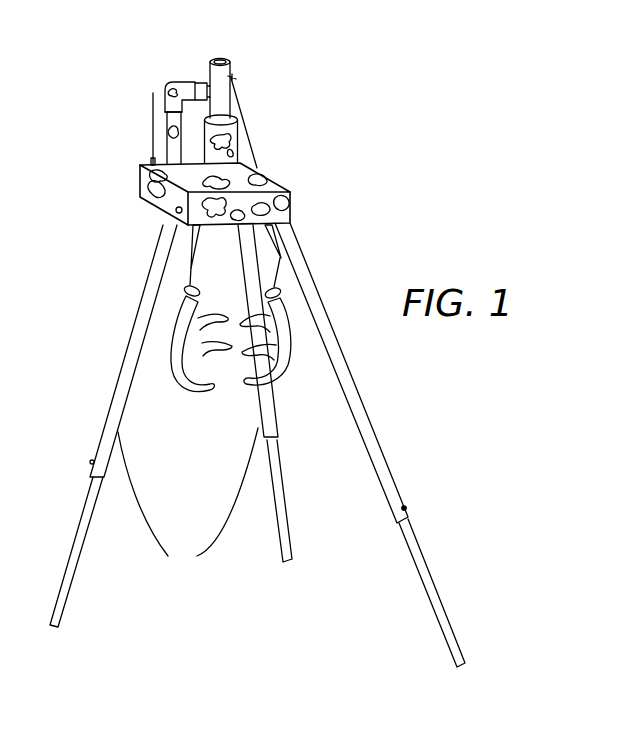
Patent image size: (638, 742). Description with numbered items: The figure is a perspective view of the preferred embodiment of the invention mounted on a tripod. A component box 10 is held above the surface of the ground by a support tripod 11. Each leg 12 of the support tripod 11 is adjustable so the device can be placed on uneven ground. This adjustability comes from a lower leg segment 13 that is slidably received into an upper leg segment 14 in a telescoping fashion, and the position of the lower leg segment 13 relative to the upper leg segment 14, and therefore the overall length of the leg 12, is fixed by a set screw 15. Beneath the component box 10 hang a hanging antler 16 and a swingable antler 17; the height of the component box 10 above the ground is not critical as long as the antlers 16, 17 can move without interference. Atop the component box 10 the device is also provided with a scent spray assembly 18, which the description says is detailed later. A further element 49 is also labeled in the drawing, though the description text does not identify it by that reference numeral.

The component box 10 is at (273, 173).
The support tripod 11 is at (285, 445).
The leg 12 is at (188, 500).
The lower leg segment 13 is at (438, 590).
The upper leg segment 14 is at (348, 363).
The set screw 15 is at (406, 508).
The hanging antler 16 is at (286, 372).
The swingable antler 17 is at (172, 378).
The scent spray assembly 18 is at (186, 56).
The antenna rod 49 is at (151, 132).